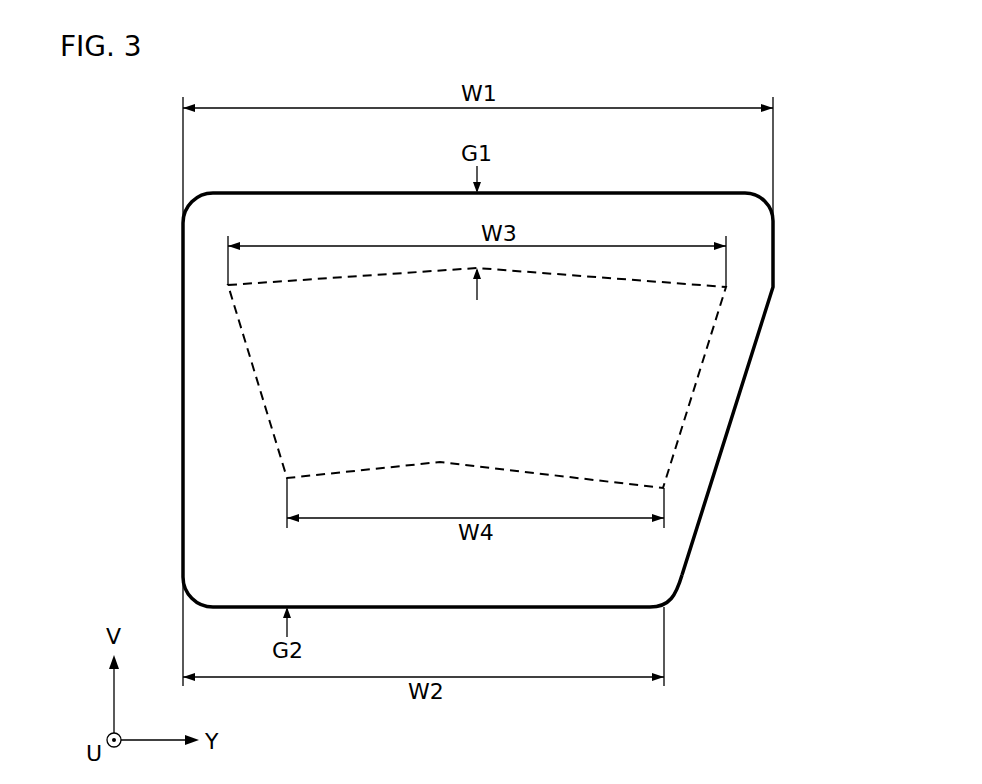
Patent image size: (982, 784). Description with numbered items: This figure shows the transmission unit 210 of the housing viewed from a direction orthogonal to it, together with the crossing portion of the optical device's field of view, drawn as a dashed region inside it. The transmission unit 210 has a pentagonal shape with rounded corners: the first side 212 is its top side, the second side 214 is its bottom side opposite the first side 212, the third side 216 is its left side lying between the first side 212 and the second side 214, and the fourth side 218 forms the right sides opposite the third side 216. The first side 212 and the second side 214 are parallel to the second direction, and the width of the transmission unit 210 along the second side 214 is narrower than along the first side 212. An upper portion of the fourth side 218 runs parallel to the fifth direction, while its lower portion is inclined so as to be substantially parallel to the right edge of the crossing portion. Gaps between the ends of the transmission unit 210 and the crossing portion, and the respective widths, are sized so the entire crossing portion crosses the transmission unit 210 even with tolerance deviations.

The transmission unit 210 is at (255, 186).
The first side 212 is at (663, 193).
The second side 214 is at (582, 608).
The third side 216 is at (183, 378).
The fourth side 218 is at (732, 427).